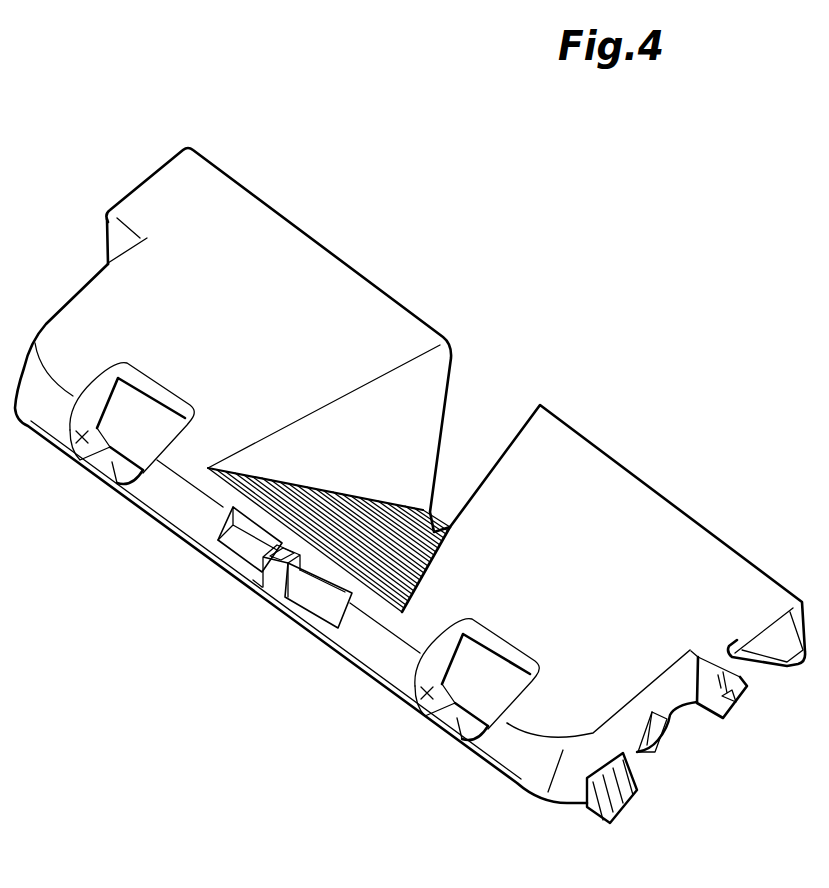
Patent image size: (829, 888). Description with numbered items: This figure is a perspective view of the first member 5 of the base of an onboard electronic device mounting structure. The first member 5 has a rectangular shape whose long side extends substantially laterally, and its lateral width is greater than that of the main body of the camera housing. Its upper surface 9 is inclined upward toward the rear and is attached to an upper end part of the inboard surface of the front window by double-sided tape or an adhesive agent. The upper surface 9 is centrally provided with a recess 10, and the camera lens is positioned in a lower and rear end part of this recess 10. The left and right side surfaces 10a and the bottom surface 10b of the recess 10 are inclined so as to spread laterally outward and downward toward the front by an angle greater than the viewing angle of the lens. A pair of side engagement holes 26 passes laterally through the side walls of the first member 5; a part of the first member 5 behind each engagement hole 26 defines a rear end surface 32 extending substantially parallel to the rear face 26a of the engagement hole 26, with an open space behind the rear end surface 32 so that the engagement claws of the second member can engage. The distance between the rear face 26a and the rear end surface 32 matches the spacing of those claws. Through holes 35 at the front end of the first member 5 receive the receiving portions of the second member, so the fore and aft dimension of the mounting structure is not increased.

The first member 5 is at (333, 176).
The upper surface 9 is at (173, 190).
The recess 10 is at (465, 398).
The side surfaces 10a is at (420, 357).
The bottom surface 10b is at (440, 528).
The through holes 35 is at (80, 460).
The rear end surface 32 is at (690, 718).
The side engagement holes 26 is at (652, 762).
The rear face 26a is at (660, 738).